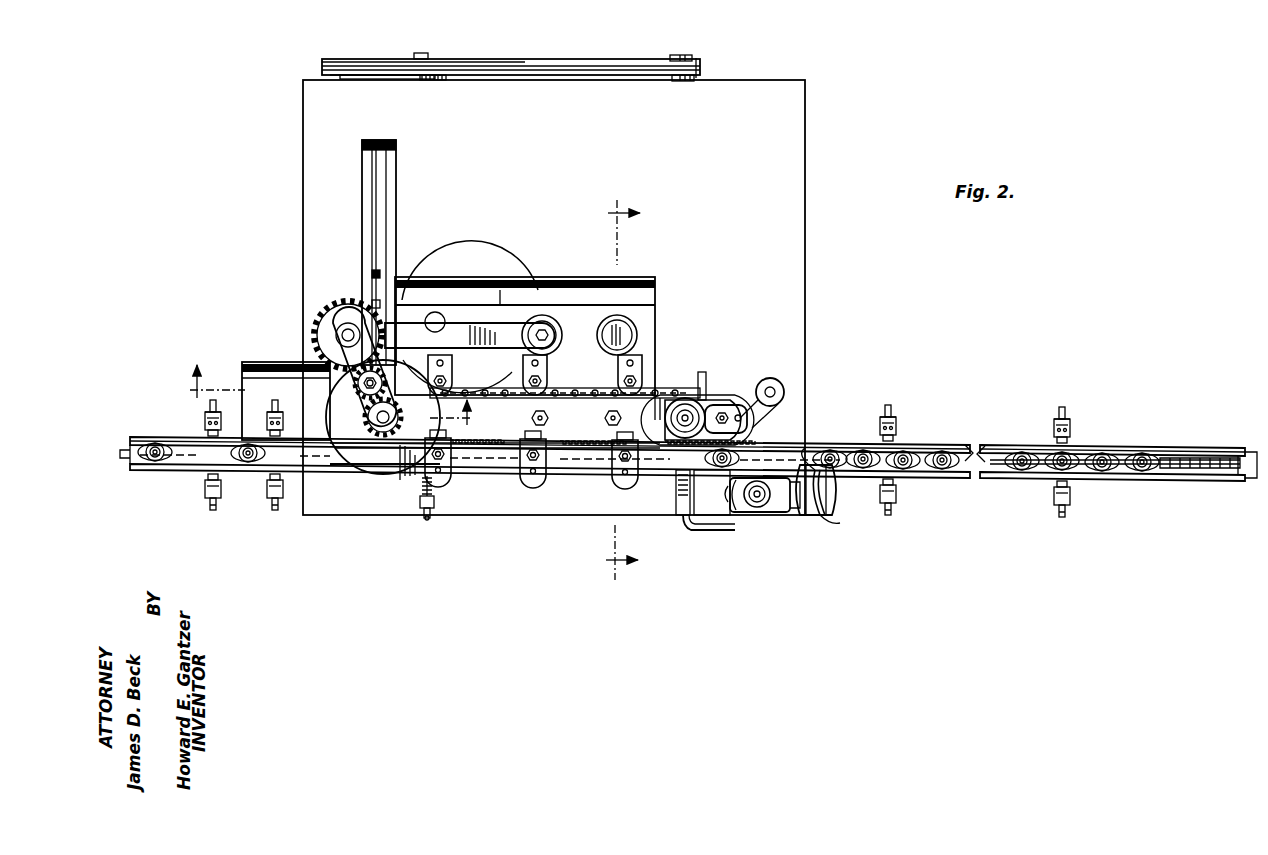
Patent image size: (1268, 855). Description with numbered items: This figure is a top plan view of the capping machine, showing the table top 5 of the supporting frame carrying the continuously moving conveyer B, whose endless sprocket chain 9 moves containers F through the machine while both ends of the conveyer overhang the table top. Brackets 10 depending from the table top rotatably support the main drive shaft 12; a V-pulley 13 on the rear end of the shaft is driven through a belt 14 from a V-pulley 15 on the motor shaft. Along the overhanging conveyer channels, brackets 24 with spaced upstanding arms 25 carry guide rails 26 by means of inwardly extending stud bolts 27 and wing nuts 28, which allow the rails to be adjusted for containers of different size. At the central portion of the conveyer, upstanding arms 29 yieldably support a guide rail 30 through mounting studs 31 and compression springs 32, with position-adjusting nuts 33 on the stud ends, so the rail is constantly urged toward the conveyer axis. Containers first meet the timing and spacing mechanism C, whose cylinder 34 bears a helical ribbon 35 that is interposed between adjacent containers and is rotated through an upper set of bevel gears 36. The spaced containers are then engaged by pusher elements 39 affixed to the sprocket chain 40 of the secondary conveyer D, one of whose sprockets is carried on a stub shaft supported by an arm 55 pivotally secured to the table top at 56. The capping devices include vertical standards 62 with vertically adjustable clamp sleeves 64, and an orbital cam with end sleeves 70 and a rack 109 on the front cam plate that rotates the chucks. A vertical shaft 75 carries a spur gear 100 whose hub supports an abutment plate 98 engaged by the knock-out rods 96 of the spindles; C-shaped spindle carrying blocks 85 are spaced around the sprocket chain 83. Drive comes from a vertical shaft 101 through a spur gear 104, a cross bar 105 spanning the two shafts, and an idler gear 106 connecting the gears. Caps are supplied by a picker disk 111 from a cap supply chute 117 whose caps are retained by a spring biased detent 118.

The table top 5 is at (806, 230).
The sprocket chain 9 is at (623, 392).
The brackets 10 is at (329, 396).
The shaft 12 is at (421, 55).
The V-pulley 13 is at (352, 60).
The belt 14 is at (590, 50).
The V-pulley 15 is at (690, 60).
The brackets 24 is at (205, 425).
The upstanding arms 25 is at (203, 414).
The guide rails 26 is at (147, 433).
The stud bolts 27 is at (204, 476).
The wing nuts 28 is at (206, 492).
The upstanding arms 29 is at (434, 503).
The guide rail 30 is at (500, 474).
The mounting studs 31 is at (426, 518).
The compression springs 32 is at (432, 488).
The position-adjusting nuts 33 is at (422, 516).
The cylinder 34 is at (834, 522).
The helical ribbon 35 is at (818, 520).
The upper set of bevel gears 36 is at (770, 522).
The pusher elements 39 is at (706, 370).
The sprocket chain 40 is at (676, 398).
The arm 55 is at (728, 398).
The pivot 56 is at (775, 378).
The vertical standards 62 is at (628, 332).
The clamp sleeves 64 is at (560, 333).
The sleeves 70 is at (655, 418).
The shaft 75 is at (372, 418).
The sprocket chain 83 is at (565, 388).
The spindle carrying blocks 85 is at (641, 362).
The knock-out rod 96 is at (614, 474).
The abutment plate 98 is at (364, 468).
The spur gear 100 is at (376, 439).
The shaft 101 is at (322, 338).
The spur gear 104 is at (348, 302).
The cross bar 105 is at (320, 352).
The idler gear 106 is at (352, 383).
The rack 109 is at (597, 425).
The picker disk 111 is at (452, 265).
The cap supply chute 117 is at (390, 180).
The spring biased detent 118 is at (388, 268).
The conveyer B is at (1144, 438).
The timing and spacing mechanism C is at (864, 524).
The secondary conveyer D is at (725, 380).
The containers F is at (140, 468).